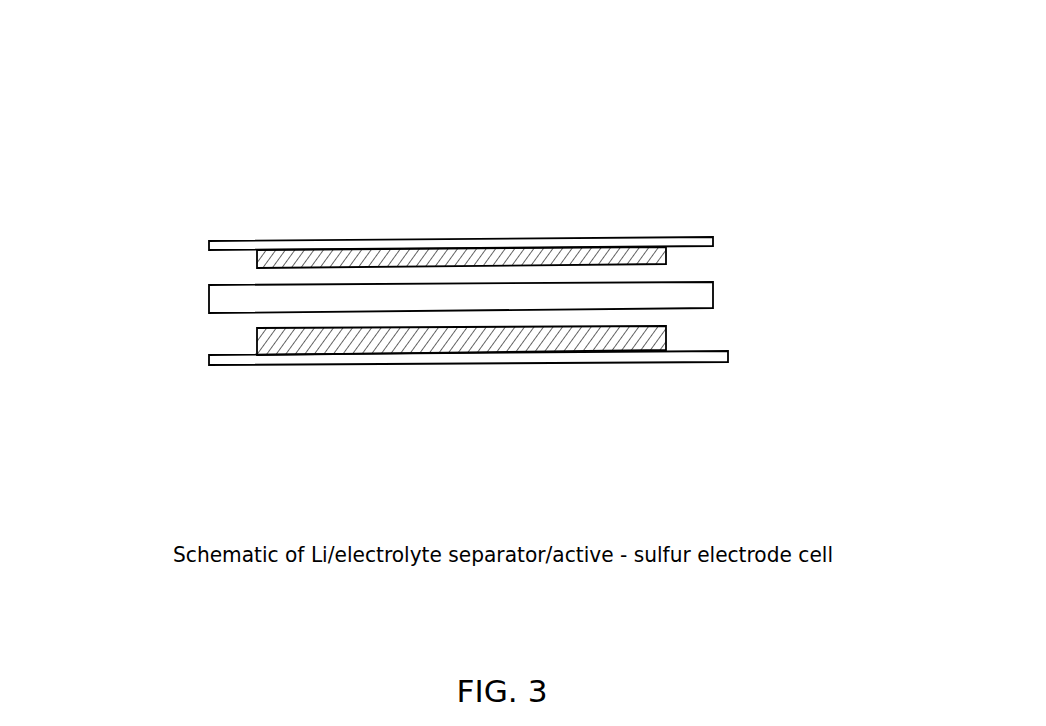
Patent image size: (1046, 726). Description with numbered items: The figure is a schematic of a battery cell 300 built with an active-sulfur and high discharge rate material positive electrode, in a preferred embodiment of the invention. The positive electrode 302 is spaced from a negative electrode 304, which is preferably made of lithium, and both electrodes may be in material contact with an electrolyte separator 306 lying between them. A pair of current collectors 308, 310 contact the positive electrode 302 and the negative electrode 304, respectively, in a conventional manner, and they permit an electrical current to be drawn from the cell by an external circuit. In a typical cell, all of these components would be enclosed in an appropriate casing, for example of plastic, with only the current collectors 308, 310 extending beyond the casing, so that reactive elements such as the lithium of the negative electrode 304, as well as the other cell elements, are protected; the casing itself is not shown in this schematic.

The battery cell 300 is at (392, 108).
The positive electrode 302 is at (585, 339).
The negative electrode 304 is at (355, 218).
The electrolyte separator 306 is at (561, 198).
The current collector 308 is at (516, 424).
The current collector 310 is at (507, 203).